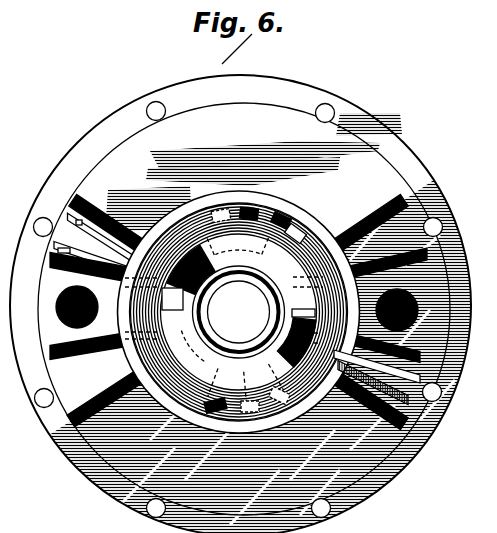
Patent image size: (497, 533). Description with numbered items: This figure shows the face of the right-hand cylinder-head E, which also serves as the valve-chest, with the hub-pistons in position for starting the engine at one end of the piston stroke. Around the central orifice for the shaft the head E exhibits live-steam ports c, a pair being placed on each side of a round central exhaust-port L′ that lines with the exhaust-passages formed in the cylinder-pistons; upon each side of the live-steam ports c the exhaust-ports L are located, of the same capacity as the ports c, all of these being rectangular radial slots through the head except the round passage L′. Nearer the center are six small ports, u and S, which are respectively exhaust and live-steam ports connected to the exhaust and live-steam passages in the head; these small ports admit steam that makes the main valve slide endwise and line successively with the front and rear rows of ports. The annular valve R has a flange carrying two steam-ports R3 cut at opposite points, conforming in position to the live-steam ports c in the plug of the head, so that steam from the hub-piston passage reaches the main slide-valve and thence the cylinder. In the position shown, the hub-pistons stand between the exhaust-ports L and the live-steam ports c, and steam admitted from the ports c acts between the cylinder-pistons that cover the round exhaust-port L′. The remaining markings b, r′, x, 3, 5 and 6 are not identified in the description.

The cylinder-head E is at (248, 304).
The exhaust-ports L is at (238, 305).
The round exhaust-port L′ is at (231, 352).
The live-steam ports c is at (239, 287).
The brush holder bar b is at (377, 387).
The valve R is at (200, 272).
The steam-ports R3 is at (300, 350).
The live-steam ports S is at (224, 210).
The exhaust-ports u is at (248, 400).
The brush block r′ is at (300, 228).
The brush block x is at (276, 390).
The hidden contact segment 3 is at (237, 248).
The hidden contact segment 5 is at (216, 246).
The hidden contact segment 6 is at (194, 347).